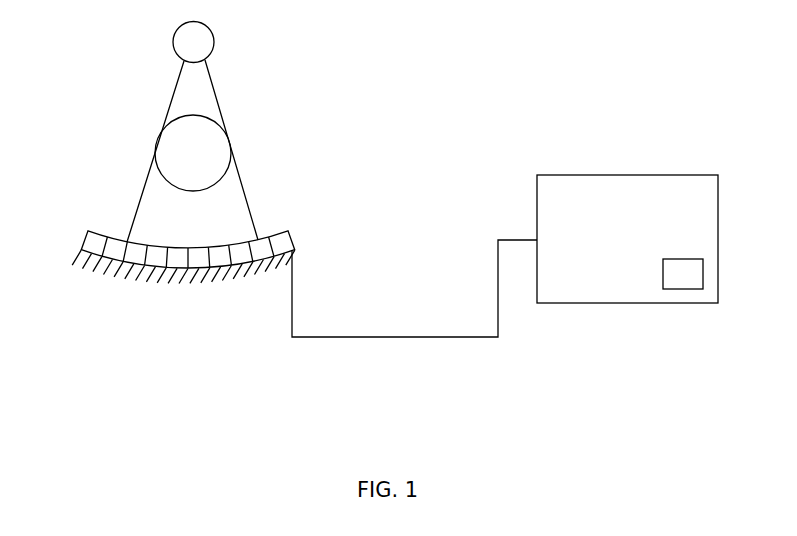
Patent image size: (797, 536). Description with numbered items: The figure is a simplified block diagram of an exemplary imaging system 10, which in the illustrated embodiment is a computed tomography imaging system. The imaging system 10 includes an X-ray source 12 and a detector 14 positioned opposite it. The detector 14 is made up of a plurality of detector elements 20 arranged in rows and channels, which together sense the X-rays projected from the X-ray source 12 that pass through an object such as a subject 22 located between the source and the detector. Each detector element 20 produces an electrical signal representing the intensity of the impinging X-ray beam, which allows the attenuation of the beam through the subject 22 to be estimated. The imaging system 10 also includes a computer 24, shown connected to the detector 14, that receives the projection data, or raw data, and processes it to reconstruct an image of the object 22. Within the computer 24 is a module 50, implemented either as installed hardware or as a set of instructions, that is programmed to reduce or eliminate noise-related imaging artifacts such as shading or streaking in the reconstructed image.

The imaging system 10 is at (545, 127).
The X-ray source 12 is at (214, 40).
The detector 14 is at (84, 233).
The detector elements 20 is at (183, 299).
The subject 22 is at (231, 148).
The computer 24 is at (596, 223).
The module 50 is at (704, 273).